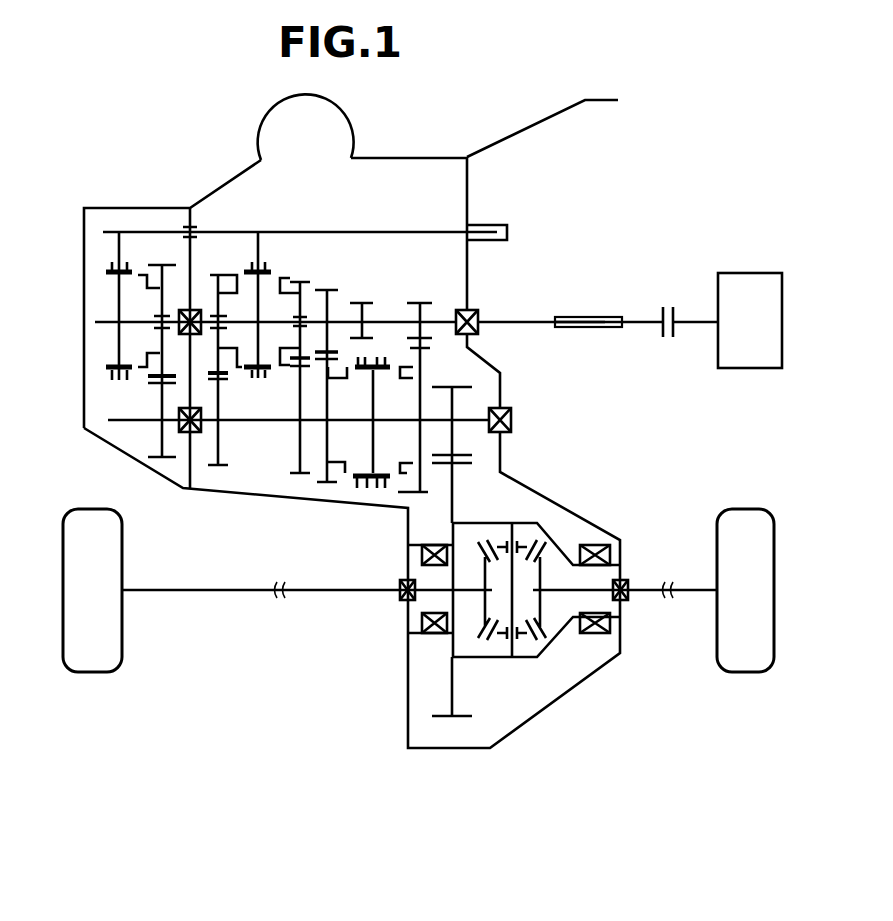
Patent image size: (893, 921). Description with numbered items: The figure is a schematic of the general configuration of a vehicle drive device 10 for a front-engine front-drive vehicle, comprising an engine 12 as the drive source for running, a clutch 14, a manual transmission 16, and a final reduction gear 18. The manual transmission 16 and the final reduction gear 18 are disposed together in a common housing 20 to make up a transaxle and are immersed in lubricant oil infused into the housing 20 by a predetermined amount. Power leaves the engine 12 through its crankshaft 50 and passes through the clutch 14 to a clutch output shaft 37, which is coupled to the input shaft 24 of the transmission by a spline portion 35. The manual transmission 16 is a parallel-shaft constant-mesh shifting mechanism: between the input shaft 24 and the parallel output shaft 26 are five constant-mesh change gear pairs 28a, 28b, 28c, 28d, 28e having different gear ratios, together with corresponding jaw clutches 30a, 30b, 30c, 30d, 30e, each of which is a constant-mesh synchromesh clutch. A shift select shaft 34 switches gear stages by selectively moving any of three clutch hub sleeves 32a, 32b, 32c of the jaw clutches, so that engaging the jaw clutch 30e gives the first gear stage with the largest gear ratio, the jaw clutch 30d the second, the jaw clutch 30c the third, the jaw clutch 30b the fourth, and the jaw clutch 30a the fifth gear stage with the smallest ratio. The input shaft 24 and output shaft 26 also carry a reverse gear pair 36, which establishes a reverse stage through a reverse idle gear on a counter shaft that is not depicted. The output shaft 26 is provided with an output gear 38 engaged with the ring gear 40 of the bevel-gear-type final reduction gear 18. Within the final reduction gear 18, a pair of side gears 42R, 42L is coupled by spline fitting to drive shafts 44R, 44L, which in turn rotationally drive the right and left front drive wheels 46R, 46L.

The vehicle drive device 10 is at (683, 92).
The engine 12 is at (730, 278).
The clutch 14 is at (658, 300).
The manual transmission 16 is at (395, 185).
The final reduction gear 18 is at (515, 683).
The housing 20 is at (375, 157).
The input shaft 24 is at (515, 322).
The output shaft 26 is at (127, 425).
The change gear pair 28a is at (162, 257).
The change gear pair 28b is at (218, 468).
The change gear pair 28c is at (300, 478).
The change gear pair 28d is at (325, 285).
The change gear pair 28e is at (420, 298).
The jaw clutch 30a is at (142, 380).
The jaw clutch 30b is at (233, 267).
The jaw clutch 30c is at (275, 258).
The jaw clutch 30d is at (327, 488).
The jaw clutch 30e is at (373, 493).
The clutch hub sleeve 32a is at (112, 262).
The clutch hub sleeve 32b is at (250, 258).
The clutch hub sleeve 32c is at (387, 356).
The shift select shaft 34 is at (128, 230).
The spline portion 35 is at (582, 332).
The reverse gear pair 36 is at (360, 298).
The clutch output shaft 37 is at (632, 318).
The output gear 38 is at (462, 387).
The ring gear 40 is at (458, 718).
The side gear 42L is at (480, 602).
The side gear 42R is at (540, 572).
The drive shaft 44L is at (207, 592).
The drive shaft 44R is at (648, 592).
The front wheel 46L is at (97, 657).
The front wheel 46R is at (745, 655).
The crankshaft 50 is at (712, 325).